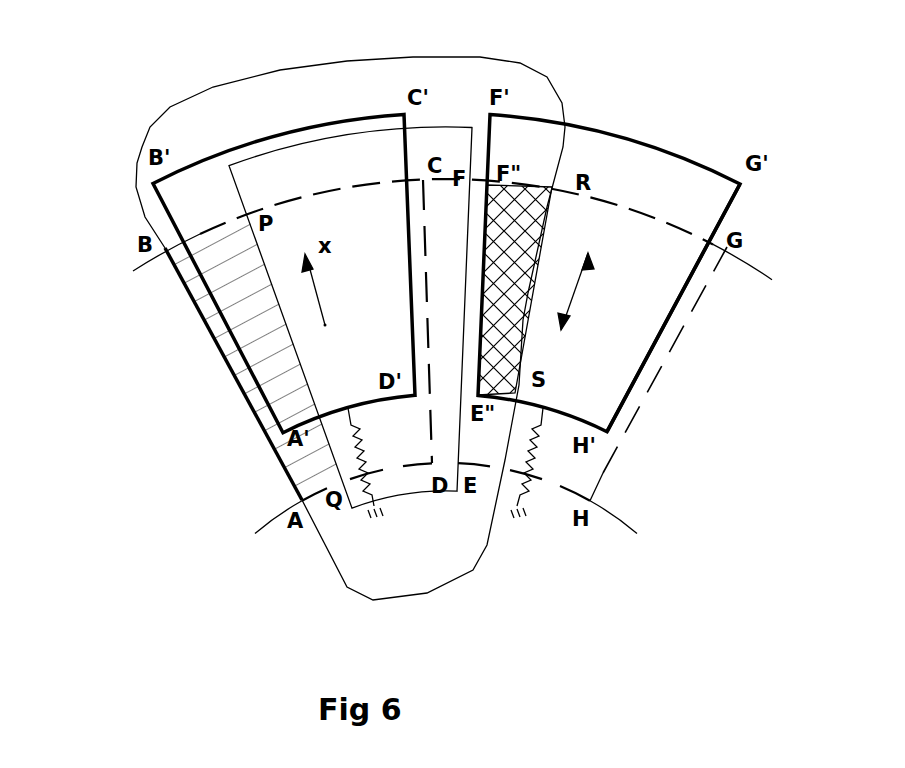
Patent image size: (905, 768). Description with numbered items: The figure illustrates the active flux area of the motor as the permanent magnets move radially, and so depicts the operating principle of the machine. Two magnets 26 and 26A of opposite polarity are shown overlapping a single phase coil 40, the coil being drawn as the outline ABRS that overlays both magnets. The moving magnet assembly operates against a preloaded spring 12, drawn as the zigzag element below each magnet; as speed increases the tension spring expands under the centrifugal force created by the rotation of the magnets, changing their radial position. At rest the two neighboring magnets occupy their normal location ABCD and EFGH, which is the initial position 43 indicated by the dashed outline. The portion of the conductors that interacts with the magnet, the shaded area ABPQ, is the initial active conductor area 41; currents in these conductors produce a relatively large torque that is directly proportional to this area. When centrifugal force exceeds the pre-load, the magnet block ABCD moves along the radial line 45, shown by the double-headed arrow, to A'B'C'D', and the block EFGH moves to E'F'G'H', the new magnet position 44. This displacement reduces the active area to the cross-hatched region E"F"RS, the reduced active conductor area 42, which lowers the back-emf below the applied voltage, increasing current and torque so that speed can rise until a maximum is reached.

The spring 12 is at (527, 493).
The magnet 26 is at (183, 203).
The magnet 26A is at (653, 165).
The phase coil 40 is at (528, 83).
The initial active conductor area 41 is at (253, 342).
The reduced active conductor area 42 is at (540, 222).
The initial position 43 is at (593, 462).
The new magnet position 44 is at (595, 378).
The radial line 45 is at (577, 300).